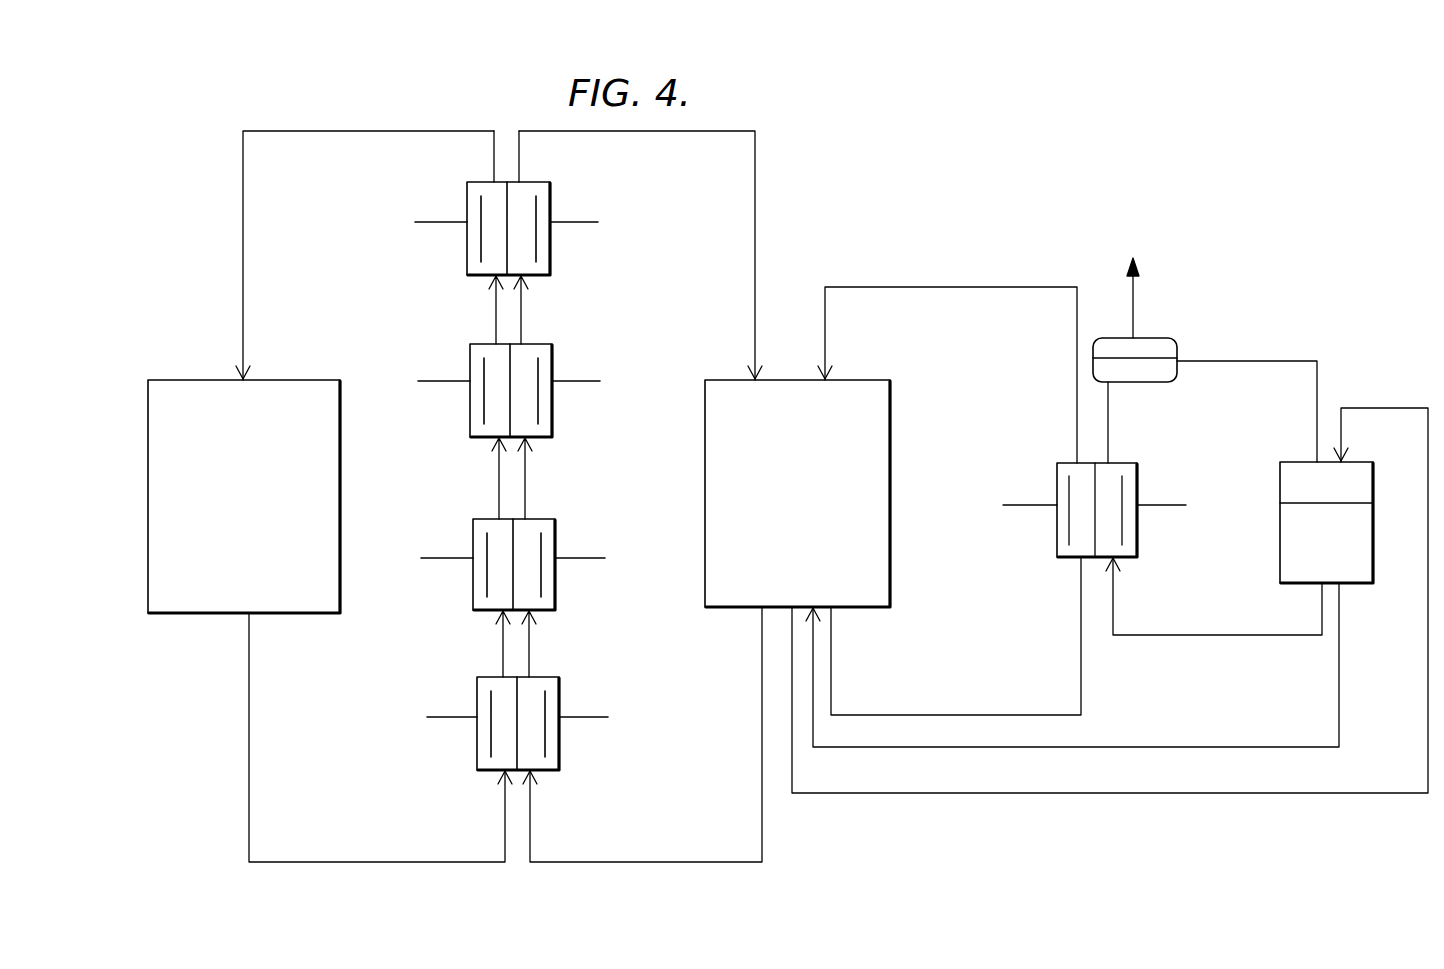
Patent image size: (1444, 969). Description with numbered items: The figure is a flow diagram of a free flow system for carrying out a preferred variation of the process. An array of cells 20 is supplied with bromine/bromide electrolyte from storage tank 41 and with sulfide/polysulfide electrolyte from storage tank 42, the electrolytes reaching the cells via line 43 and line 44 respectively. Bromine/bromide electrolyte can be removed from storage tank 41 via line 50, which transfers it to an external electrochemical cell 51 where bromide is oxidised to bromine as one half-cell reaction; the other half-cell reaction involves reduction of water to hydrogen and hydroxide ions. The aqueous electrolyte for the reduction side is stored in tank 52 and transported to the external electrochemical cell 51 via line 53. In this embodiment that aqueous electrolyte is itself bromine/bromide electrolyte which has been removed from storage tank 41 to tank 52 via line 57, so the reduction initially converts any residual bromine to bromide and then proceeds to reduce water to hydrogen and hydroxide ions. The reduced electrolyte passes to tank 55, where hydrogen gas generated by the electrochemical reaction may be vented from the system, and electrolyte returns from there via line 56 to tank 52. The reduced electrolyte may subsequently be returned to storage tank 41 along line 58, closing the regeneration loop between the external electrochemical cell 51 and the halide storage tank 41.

The array of cells 20 is at (596, 190).
The storage tank 41 is at (718, 380).
The storage tank 42 is at (190, 380).
The line 43 is at (635, 862).
The line 44 is at (355, 862).
The line 50 is at (927, 715).
The external electrochemical cell 51 is at (1058, 463).
The tank 52 is at (1280, 553).
The line 53 is at (1216, 635).
The tank 55 is at (1155, 338).
The line 56 is at (1249, 361).
The line 57 is at (1155, 793).
The line 58 is at (1125, 747).